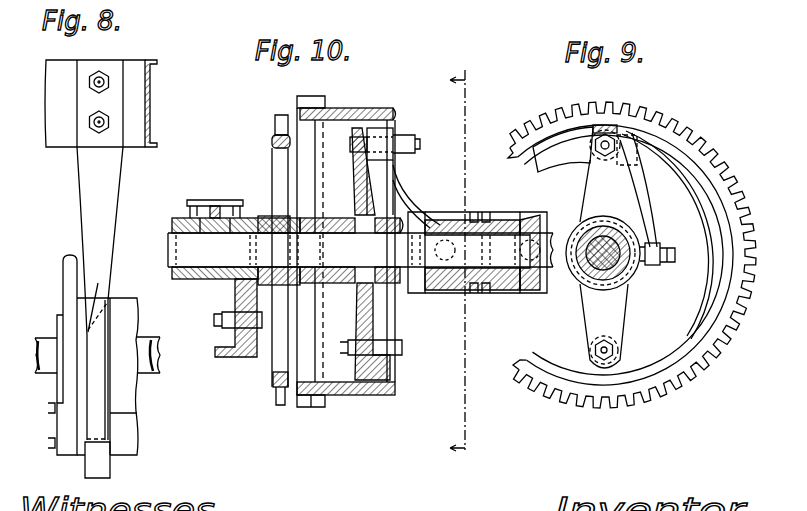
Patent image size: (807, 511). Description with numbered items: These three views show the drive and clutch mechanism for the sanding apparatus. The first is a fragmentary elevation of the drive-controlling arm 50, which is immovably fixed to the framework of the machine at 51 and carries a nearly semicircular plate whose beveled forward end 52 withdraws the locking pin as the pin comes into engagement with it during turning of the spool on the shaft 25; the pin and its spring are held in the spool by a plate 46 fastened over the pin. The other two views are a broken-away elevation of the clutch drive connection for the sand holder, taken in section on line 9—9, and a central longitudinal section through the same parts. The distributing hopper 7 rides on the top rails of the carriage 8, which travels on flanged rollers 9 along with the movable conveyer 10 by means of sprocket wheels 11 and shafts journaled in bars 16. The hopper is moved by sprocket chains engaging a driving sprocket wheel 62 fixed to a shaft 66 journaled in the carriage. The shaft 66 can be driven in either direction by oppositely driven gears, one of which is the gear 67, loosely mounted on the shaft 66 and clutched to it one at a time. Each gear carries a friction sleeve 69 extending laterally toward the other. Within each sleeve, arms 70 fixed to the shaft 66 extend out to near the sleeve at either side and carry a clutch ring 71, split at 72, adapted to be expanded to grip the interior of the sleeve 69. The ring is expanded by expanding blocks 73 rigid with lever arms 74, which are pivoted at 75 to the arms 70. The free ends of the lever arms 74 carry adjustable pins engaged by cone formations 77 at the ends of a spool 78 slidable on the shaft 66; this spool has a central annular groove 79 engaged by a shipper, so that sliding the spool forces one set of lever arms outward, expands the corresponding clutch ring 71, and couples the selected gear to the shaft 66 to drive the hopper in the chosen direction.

In FIG. 9, the distributing hopper 7 is at (550, 0).
In FIG. 10, the carriage 8 is at (232, 290).
In FIG. 10, the flanged rollers 9 is at (464, 264).
In FIG. 9, the movable conveyer 10 is at (604, 264).
In FIG. 9, the sprocket wheels 11 is at (686, 342).
In FIG. 9, the bars 16 is at (660, 246).
In FIG. 8, the shaft 25 is at (148, 355).
In FIG. 8, the plate 46 is at (57, 430).
In FIG. 8, the arm 50 is at (107, 190).
In FIG. 8, the framework fastening point 51 is at (112, 99).
In FIG. 8, the forward end 52 is at (98, 283).
In FIG. 10, the driving sprocket wheel 62 is at (278, 158).
In FIG. 10, the shaft 66 is at (262, 222).
In FIG. 9, the shaft 66 is at (594, 230).
In FIG. 10, the gear 67 is at (308, 407).
In FIG. 10, the friction sleeve 69 is at (360, 395).
In FIG. 10, the arms 70 is at (360, 174).
In FIG. 10, the clutch ring 71 is at (430, 224).
In FIG. 9, the split 72 is at (608, 128).
In FIG. 10, the expanding blocks 73 is at (380, 127).
In FIG. 9, the expanding blocks 73 is at (612, 127).
In FIG. 10, the lever arms 74 is at (410, 187).
In FIG. 9, the lever arms 74 is at (640, 187).
In FIG. 10, the pivot 75 is at (416, 142).
In FIG. 9, the pivot 75 is at (620, 143).
In FIG. 10, the cone formations 77 is at (526, 220).
In FIG. 10, the spool 78 is at (500, 280).
In FIG. 10, the central annular groove 79 is at (477, 287).